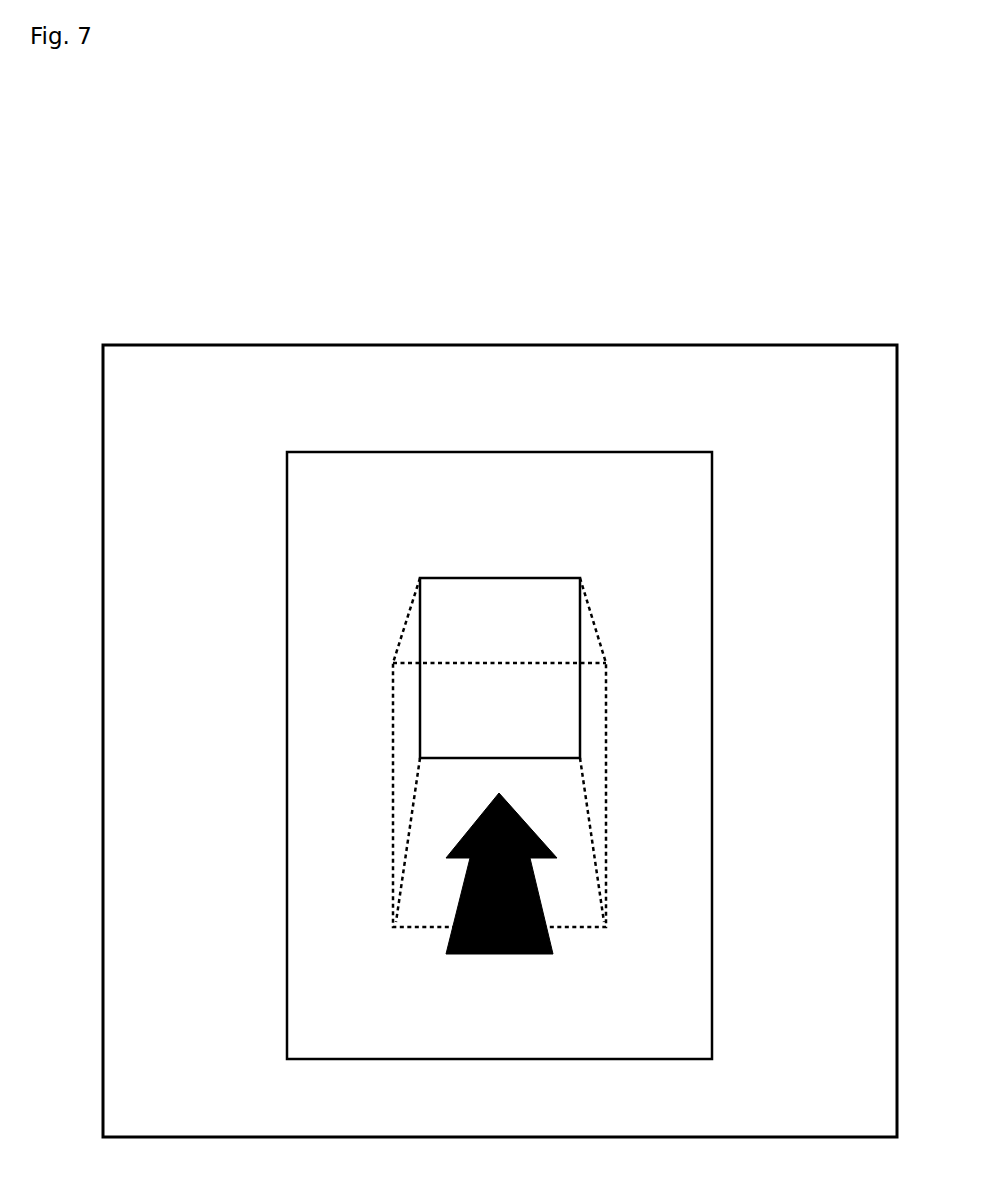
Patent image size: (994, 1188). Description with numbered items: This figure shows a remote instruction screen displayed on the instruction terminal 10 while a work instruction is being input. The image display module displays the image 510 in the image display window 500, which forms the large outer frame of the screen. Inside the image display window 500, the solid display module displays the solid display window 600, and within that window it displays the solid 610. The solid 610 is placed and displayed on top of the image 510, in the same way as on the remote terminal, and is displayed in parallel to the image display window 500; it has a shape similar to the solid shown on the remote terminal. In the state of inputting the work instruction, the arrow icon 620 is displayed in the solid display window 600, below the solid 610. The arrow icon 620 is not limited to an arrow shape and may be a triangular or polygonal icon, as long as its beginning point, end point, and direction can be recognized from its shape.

The instruction terminal 10 is at (751, 287).
The image display window 500 is at (585, 345).
The image 510 is at (790, 453).
The solid display window 600 is at (615, 452).
The solid 610 is at (562, 590).
The arrow icon 620 is at (532, 955).